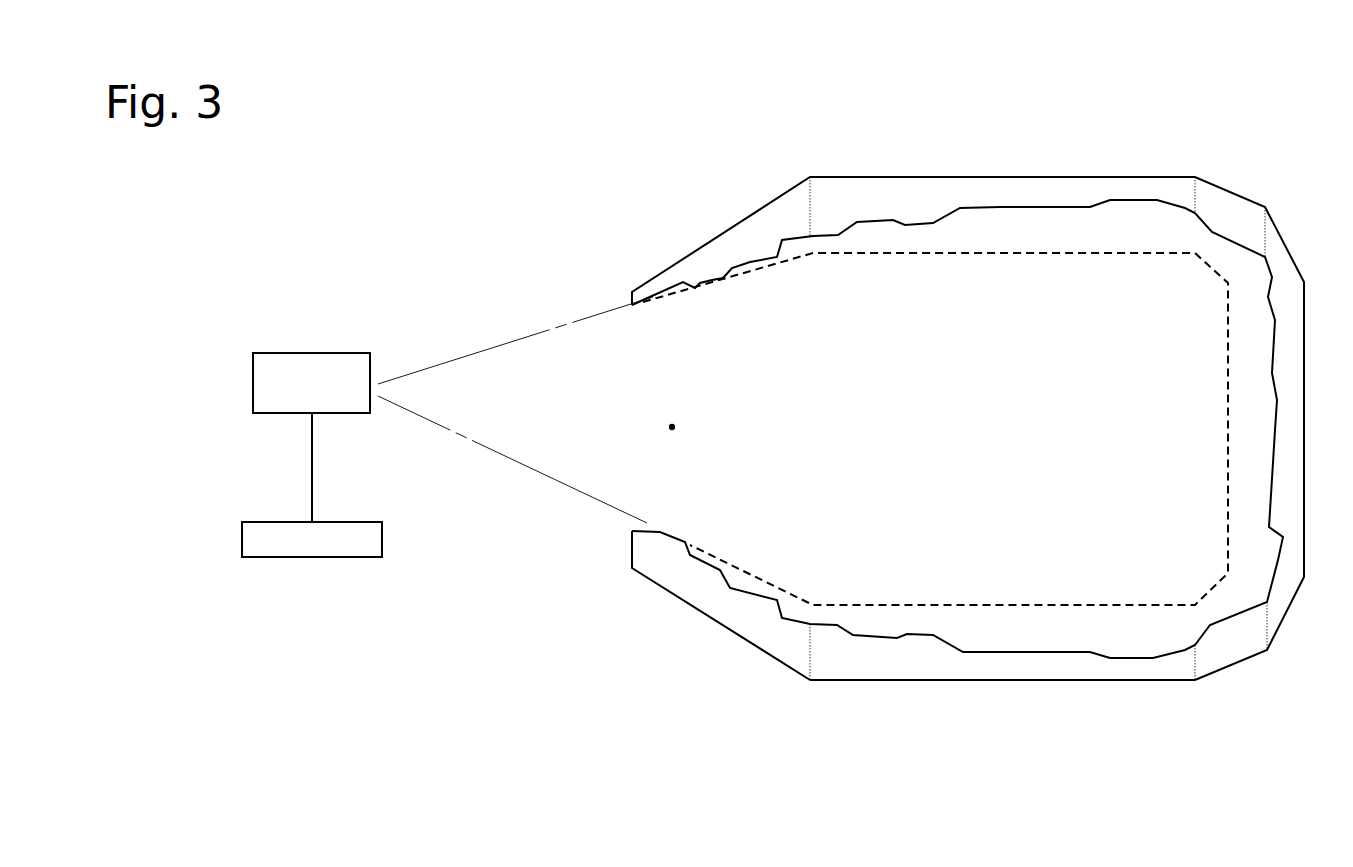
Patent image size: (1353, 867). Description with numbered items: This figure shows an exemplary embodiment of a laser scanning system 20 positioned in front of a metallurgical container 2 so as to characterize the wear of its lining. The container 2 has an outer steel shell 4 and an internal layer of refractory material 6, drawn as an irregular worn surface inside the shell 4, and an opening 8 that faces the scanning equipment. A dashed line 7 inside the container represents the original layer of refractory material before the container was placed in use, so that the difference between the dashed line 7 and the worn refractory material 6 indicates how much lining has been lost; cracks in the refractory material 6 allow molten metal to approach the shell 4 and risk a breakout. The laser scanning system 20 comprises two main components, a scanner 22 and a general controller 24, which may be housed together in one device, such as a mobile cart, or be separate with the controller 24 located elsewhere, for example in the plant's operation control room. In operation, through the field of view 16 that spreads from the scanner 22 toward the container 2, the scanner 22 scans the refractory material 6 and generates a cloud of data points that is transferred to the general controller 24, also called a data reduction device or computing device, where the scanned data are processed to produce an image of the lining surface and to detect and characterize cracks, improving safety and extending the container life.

The metallurgical container 2 is at (1013, 172).
The shell 4 is at (928, 682).
The layer of refractory material 6 is at (1157, 200).
The original layer of refractory material 7 is at (980, 255).
The opening 8 is at (670, 427).
The field of view 16 is at (560, 328).
The laser scanning system 20 is at (236, 432).
The scanner 22 is at (295, 353).
The general controller 24 is at (242, 537).